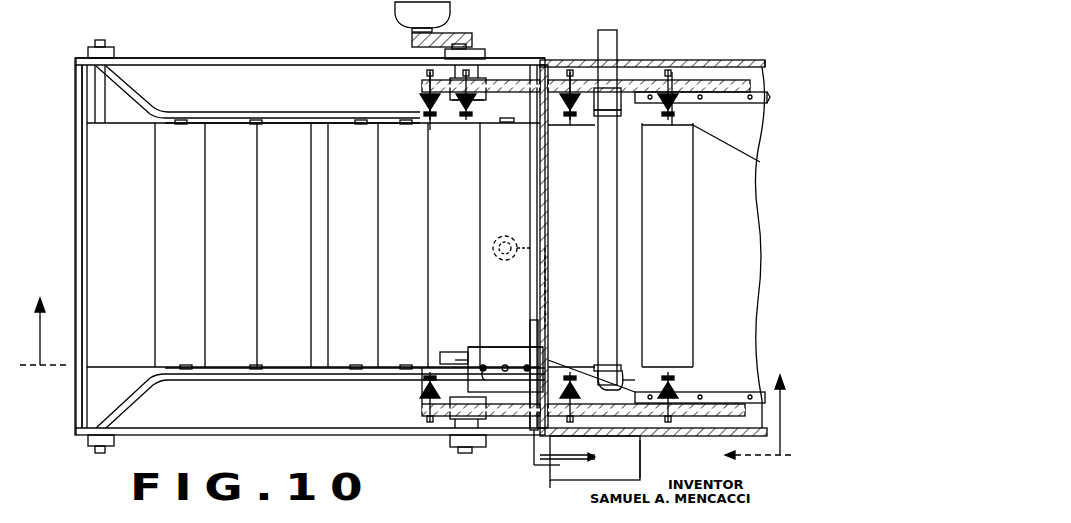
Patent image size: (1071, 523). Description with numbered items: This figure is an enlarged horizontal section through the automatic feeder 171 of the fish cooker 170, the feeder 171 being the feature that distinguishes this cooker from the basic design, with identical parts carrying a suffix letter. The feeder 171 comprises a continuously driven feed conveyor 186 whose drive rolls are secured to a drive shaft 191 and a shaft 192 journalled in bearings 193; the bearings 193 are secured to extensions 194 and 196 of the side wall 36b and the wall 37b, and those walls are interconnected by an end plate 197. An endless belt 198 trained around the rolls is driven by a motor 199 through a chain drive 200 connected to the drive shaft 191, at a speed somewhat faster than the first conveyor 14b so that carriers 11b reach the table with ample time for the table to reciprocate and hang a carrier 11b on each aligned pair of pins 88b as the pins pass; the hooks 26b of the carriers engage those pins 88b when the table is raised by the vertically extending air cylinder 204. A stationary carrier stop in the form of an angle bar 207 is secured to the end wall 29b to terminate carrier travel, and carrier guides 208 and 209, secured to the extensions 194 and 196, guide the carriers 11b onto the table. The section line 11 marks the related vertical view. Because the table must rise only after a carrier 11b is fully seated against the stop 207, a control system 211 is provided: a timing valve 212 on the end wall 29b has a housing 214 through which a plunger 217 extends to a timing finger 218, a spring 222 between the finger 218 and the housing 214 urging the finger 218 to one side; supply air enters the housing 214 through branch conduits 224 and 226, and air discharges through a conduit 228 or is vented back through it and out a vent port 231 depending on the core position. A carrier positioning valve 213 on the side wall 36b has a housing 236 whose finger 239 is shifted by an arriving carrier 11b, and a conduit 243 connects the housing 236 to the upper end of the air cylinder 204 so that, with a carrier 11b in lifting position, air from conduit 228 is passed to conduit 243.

The section line 11- 11 is at (408, 394).
The carrier 11b is at (320, 212).
The first conveyor 14b is at (640, 64).
The hooks 26b is at (178, 126).
The end wall 29b is at (568, 165).
The side wall 36b is at (648, 436).
The wall 37b is at (714, 60).
The carrier supporting pins 88b is at (466, 128).
The fish cooker 170 is at (598, 45).
The automatic feeder 171 is at (108, 187).
The feed conveyor 186 is at (128, 234).
The drive shaft 191 is at (478, 103).
The shaft 192 is at (101, 114).
The bearings 193 is at (105, 50).
The extension 194 is at (202, 428).
The extension 196 is at (280, 60).
The end plate 197 is at (76, 272).
The endless belt 198 is at (82, 250).
The motor 199 is at (400, 14).
The chain drive 200 is at (462, 44).
The air cylinder 204 is at (492, 248).
The angle bar 207 is at (532, 200).
The carrier guide 208 is at (322, 370).
The carrier guide 209 is at (250, 100).
The control system 211 is at (550, 488).
The timing valve 212 is at (548, 355).
The carrier positioning valve 213 is at (640, 466).
The housing 214 is at (478, 345).
The plunger 217 is at (455, 360).
The timing finger 218 is at (440, 352).
The spring 222 is at (422, 384).
The branch conduit 224 is at (505, 340).
The branch conduit 226 is at (527, 372).
The conduit 228 is at (552, 452).
The vent port 231 is at (527, 368).
The housing 236 is at (595, 477).
The finger 239 is at (532, 322).
The conduit 243 is at (548, 260).